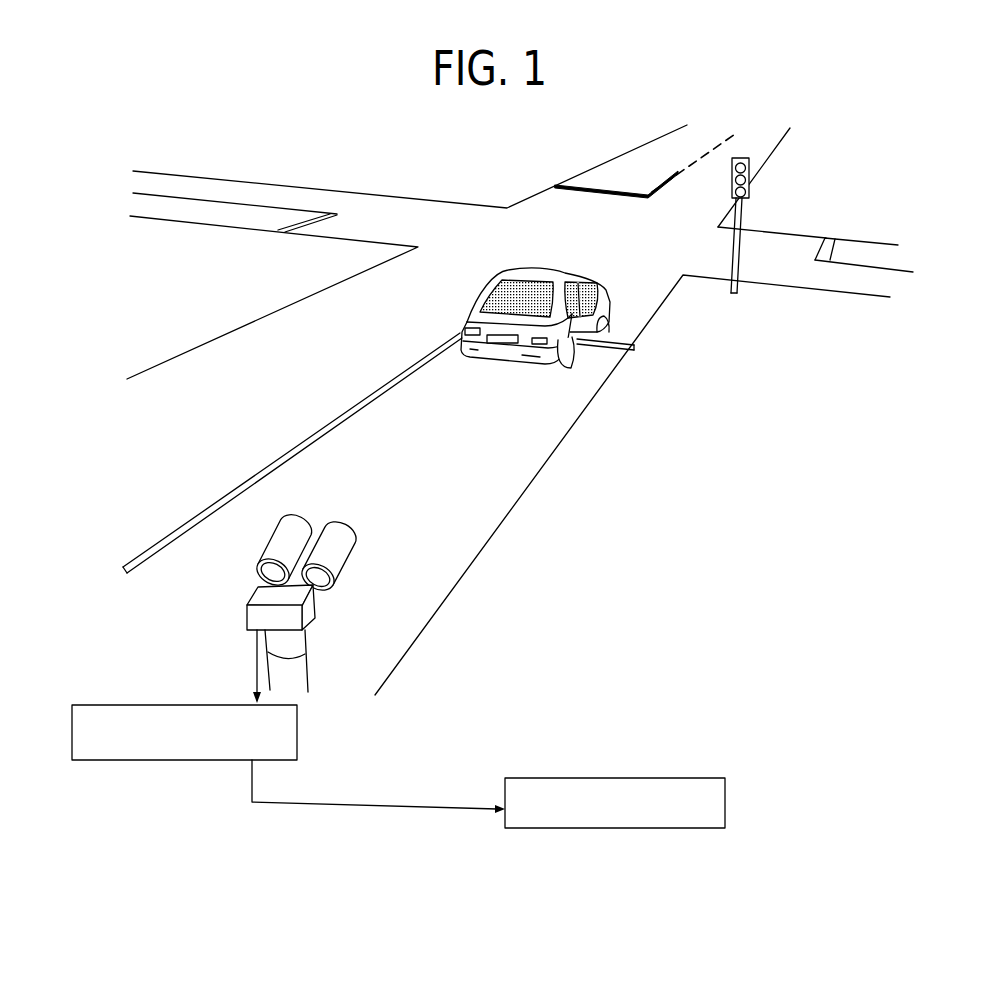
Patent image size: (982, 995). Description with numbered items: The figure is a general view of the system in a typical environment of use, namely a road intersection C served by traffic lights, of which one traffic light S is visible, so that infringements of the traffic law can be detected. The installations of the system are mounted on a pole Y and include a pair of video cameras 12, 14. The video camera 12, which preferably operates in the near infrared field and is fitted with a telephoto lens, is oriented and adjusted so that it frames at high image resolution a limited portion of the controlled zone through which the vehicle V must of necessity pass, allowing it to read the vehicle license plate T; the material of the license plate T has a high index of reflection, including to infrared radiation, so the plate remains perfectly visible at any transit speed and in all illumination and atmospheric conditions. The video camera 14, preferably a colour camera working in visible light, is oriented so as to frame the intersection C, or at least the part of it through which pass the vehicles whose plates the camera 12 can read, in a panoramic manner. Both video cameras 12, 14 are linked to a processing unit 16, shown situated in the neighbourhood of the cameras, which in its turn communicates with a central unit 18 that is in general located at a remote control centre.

The road intersection C is at (516, 170).
The traffic light S is at (751, 162).
The vehicle V is at (503, 276).
The vehicle license plate T is at (492, 350).
The video camera 12 is at (353, 556).
The video camera 14 is at (265, 550).
The pole Y is at (310, 660).
The processing unit 16 is at (297, 738).
The central unit 18 is at (552, 778).